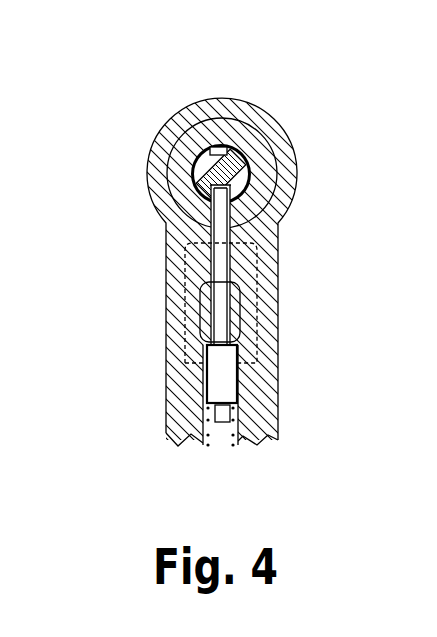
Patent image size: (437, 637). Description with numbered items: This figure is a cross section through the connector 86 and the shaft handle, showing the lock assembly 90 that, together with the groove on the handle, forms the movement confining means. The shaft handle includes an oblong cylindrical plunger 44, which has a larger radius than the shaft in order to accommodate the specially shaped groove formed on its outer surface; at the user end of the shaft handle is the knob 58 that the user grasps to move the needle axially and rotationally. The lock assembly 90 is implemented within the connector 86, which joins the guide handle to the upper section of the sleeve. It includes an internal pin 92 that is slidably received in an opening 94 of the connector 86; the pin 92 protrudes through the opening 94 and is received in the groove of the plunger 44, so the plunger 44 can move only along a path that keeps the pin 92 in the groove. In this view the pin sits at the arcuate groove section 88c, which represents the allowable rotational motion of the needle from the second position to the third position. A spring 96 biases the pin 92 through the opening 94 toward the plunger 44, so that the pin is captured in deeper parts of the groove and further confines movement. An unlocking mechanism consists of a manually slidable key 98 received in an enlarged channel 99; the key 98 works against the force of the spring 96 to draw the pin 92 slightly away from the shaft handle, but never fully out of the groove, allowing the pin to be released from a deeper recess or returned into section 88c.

The plunger 44 is at (205, 143).
The groove section 88c is at (228, 152).
The knob 58 is at (298, 172).
The internal pin 92 is at (230, 223).
The opening 94 is at (230, 267).
The enlarged channel 99 is at (195, 277).
The key 98 is at (210, 307).
The connector 86 is at (178, 378).
The spring 96 is at (200, 442).
The lock assembly 90 is at (332, 370).